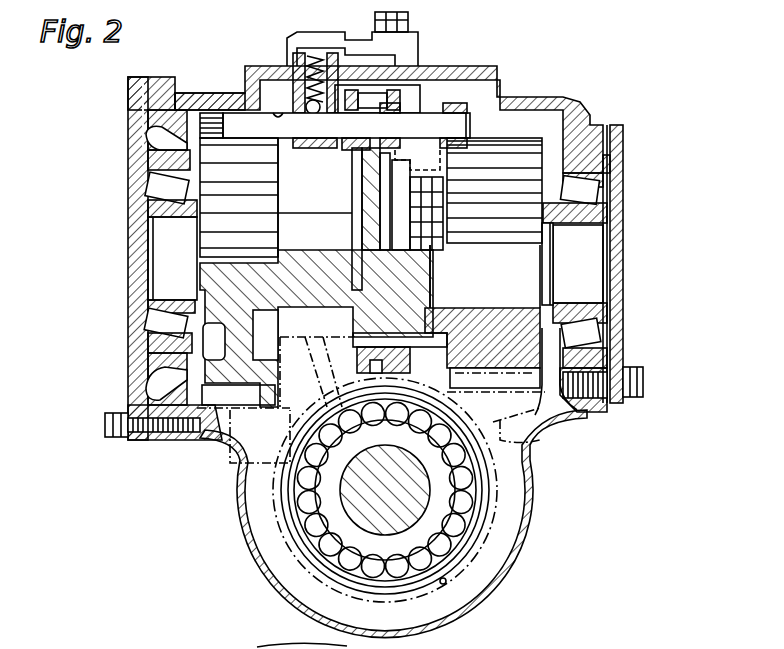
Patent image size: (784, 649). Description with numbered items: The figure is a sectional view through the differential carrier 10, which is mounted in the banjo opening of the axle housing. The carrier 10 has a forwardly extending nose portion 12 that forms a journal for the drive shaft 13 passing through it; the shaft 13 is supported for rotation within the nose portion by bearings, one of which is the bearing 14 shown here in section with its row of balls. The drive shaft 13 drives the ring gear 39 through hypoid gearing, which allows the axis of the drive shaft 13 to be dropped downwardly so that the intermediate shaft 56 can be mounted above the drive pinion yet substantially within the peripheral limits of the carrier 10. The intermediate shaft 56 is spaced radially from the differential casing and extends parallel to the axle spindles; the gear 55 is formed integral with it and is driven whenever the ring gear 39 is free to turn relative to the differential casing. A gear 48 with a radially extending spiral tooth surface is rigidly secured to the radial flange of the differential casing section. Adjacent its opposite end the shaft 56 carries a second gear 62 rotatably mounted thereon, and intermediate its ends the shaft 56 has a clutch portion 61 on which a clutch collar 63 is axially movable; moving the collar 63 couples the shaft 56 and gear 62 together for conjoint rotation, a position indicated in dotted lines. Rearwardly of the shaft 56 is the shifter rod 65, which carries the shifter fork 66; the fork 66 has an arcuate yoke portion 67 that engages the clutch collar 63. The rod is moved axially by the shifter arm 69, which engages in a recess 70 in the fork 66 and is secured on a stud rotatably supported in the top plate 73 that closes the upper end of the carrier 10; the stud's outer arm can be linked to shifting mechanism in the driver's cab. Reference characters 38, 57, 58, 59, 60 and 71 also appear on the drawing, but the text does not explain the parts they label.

The differential carrier 10 is at (487, 597).
The nose portion 12 is at (443, 584).
The drive shaft 13 is at (357, 497).
The bearing 14 is at (317, 535).
The passage 38 is at (230, 442).
The ring gear 39 is at (316, 336).
The gear 48 is at (540, 440).
The gear 55 is at (213, 362).
The intermediate shaft 56 is at (163, 245).
The tapered roller bearing 57 is at (163, 197).
The tapered roller bearing 58 is at (593, 198).
The housing wall 59 is at (137, 133).
The end cap 60 is at (620, 258).
The clutch portion 61 is at (357, 340).
The second gear 62 is at (570, 417).
The clutch collar 63 is at (370, 245).
The shifter rod 65 is at (427, 120).
The shifter fork 66 is at (353, 147).
The arcuate yoke portion 67 is at (367, 197).
The shifter arm 69 is at (373, 97).
The recess 70 is at (363, 97).
The actuator housing 71 is at (345, 43).
The top plate 73 is at (507, 67).